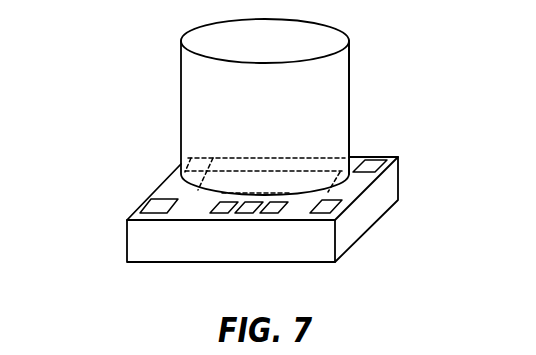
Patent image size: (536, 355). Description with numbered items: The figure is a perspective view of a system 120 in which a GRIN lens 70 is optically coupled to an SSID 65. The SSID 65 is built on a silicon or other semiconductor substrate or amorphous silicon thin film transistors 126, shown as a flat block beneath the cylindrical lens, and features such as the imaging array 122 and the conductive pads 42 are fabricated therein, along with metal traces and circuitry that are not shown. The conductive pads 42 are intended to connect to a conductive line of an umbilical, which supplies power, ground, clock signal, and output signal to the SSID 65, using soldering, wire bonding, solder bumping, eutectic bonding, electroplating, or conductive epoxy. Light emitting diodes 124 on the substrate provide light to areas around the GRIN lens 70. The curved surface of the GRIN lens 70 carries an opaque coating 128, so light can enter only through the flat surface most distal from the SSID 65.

The system 120 is at (125, 68).
The SSID 65 is at (102, 243).
The GRIN lens 70 is at (330, 74).
The opaque coating 128 is at (348, 108).
The conductive pads 42 is at (370, 165).
The imaging array 122 is at (318, 180).
The semiconductor substrate or amorphous silicon thin film transistors 126 is at (352, 217).
The light emitting diodes 124 is at (210, 207).